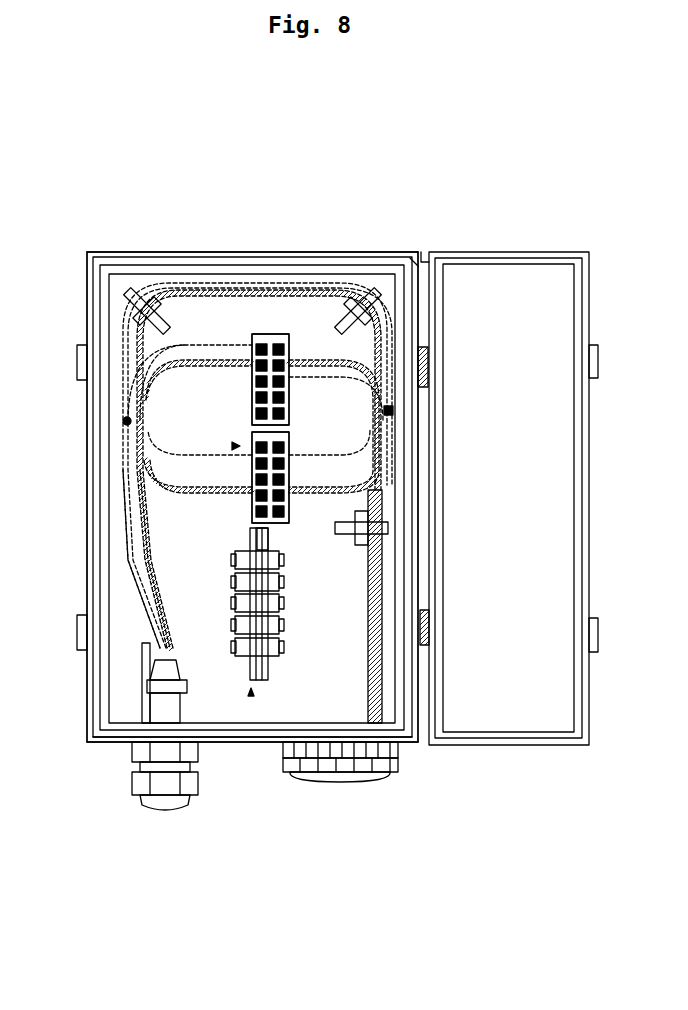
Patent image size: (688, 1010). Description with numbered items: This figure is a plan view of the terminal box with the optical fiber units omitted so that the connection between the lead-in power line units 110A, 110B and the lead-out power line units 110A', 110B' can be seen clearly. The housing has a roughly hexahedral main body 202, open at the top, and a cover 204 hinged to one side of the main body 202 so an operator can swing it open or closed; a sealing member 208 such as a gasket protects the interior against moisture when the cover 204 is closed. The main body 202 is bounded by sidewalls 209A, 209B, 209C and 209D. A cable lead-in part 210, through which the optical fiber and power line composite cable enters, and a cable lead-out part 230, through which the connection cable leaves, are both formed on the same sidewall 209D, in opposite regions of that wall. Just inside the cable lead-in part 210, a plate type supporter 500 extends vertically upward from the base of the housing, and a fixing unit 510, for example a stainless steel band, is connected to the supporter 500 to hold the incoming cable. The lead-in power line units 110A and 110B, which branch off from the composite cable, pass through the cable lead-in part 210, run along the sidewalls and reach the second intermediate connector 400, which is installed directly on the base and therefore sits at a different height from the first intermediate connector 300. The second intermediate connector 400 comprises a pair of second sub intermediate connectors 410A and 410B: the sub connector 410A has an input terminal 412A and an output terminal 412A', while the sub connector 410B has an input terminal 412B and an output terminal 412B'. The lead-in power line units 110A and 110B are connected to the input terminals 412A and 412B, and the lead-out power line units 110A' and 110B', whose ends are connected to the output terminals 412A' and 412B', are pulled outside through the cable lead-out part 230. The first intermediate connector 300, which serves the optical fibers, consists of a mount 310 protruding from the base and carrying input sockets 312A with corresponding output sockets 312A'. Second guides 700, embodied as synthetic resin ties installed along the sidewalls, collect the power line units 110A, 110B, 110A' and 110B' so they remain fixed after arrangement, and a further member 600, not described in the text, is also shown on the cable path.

The sealing member 208 is at (100, 266).
The sidewall 209A is at (87, 262).
The sidewall 209B is at (135, 250).
The right side wall 209C is at (432, 258).
The sidewall 209D is at (408, 746).
The main body 202 is at (100, 745).
The cover 204 is at (500, 746).
The cable lead-in part 210 is at (165, 797).
The cable lead-out part 230 is at (320, 782).
The first intermediate connector 300 is at (251, 696).
The mount 310 is at (268, 672).
The input socket 312A is at (273, 667).
The output socket 312A' is at (225, 667).
The second intermediate connector 400 is at (232, 446).
The second sub intermediate connector 410A is at (150, 386).
The second sub intermediate connector 410B is at (252, 505).
The input terminal 412A is at (159, 379).
The output terminal 412A' is at (385, 379).
The input terminal 412B is at (383, 477).
The output terminal 412B' is at (157, 477).
The supporter 500 is at (142, 714).
The fixing unit 510 is at (150, 686).
The cable clamp 600 is at (130, 302).
The second guide 700 is at (122, 420).
The lead-in power line unit 110A is at (95, 559).
The lead-in power line unit 110B is at (100, 559).
The lead-out power line unit 110A' is at (257, 425).
The lead-out power line unit 110B' is at (259, 433).